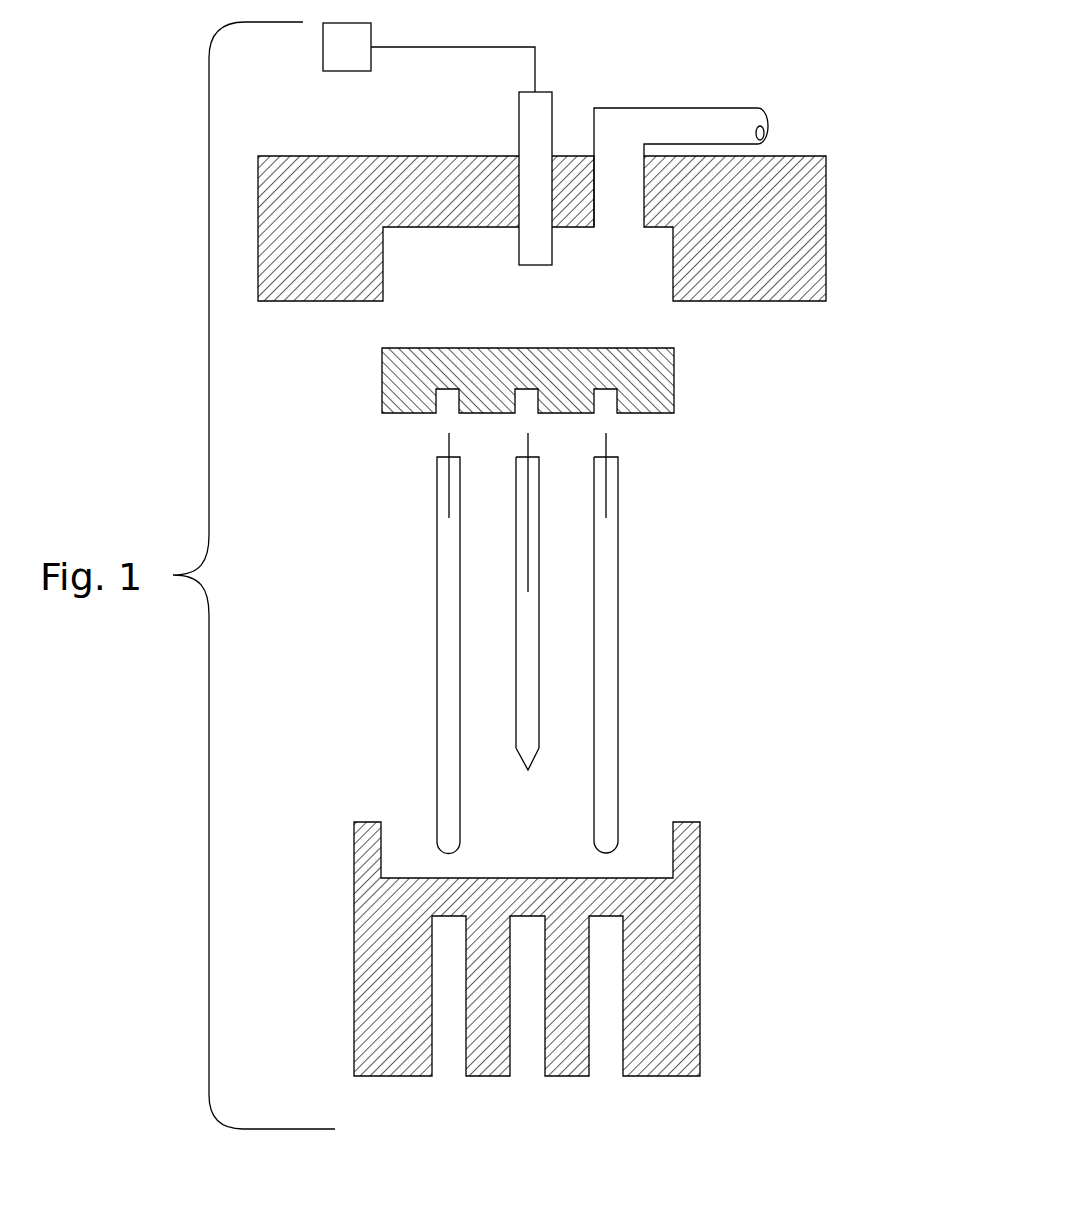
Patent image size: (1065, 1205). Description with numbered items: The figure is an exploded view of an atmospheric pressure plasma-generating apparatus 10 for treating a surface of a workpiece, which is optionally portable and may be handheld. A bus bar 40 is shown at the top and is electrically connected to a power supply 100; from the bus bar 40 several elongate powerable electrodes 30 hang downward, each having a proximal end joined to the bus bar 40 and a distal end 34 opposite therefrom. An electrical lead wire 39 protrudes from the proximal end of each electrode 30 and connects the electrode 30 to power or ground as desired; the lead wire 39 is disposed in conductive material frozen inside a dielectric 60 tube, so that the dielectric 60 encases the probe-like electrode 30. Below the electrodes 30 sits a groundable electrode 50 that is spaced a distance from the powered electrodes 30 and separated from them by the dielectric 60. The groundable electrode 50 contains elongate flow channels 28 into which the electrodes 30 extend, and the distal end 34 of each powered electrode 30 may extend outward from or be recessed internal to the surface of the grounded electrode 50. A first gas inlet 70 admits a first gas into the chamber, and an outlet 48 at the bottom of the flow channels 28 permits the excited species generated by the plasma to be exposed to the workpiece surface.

The apparatus 10 is at (398, 652).
The flow channels 28 is at (522, 1063).
The powerable electrode 30 is at (561, 668).
The distal end 34 is at (528, 770).
The electrical lead wire 39 is at (526, 448).
The bus bar 40 is at (675, 381).
The outlet 48 is at (527, 1067).
The groundable electrode 50 is at (700, 942).
The dielectric 60 is at (618, 667).
The first gas inlet 70 is at (668, 115).
The power supply 100 is at (352, 66).